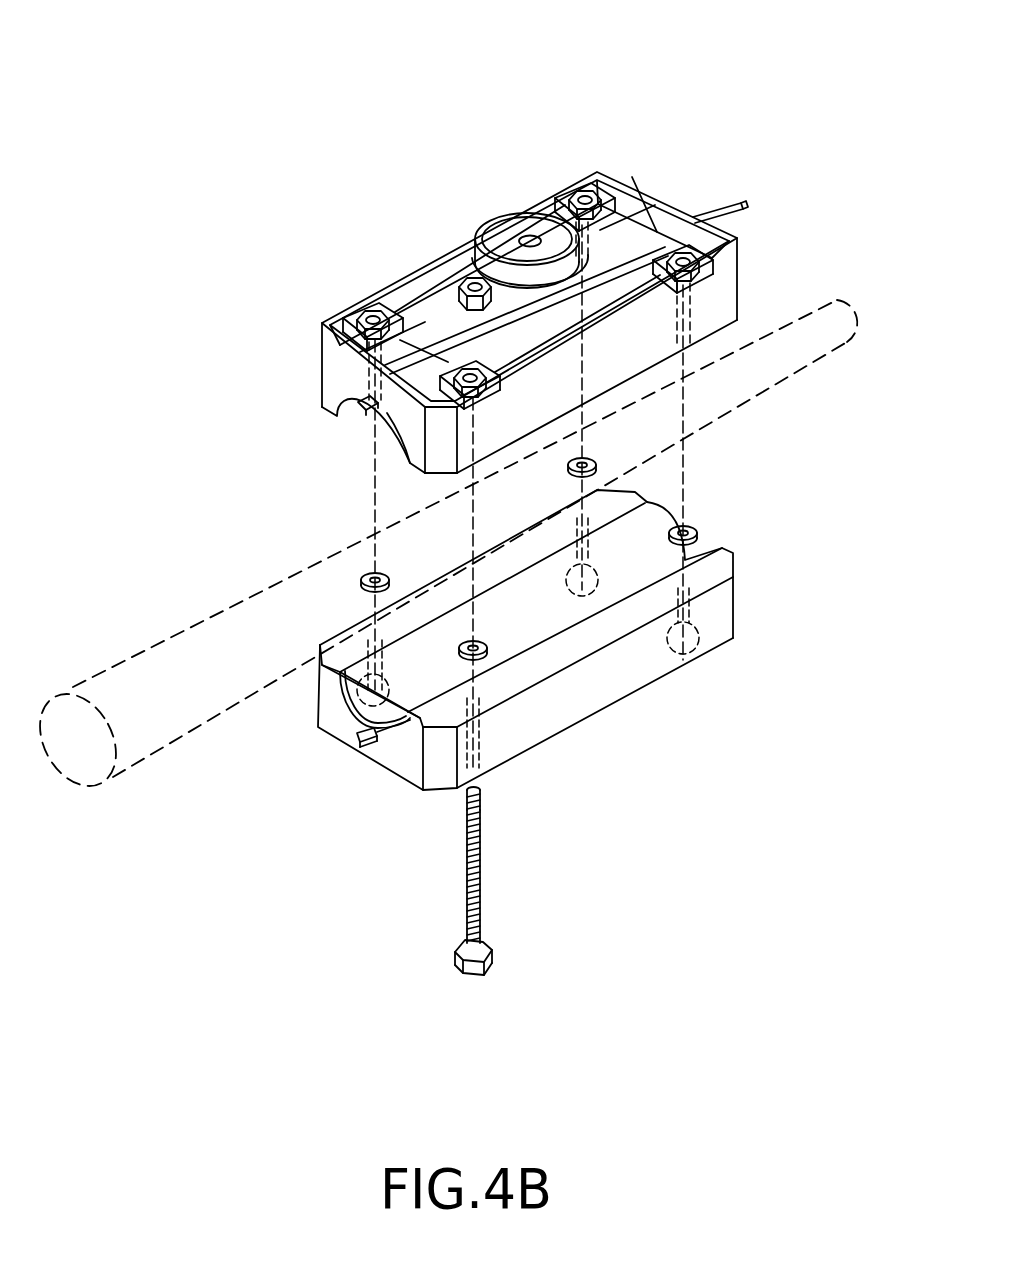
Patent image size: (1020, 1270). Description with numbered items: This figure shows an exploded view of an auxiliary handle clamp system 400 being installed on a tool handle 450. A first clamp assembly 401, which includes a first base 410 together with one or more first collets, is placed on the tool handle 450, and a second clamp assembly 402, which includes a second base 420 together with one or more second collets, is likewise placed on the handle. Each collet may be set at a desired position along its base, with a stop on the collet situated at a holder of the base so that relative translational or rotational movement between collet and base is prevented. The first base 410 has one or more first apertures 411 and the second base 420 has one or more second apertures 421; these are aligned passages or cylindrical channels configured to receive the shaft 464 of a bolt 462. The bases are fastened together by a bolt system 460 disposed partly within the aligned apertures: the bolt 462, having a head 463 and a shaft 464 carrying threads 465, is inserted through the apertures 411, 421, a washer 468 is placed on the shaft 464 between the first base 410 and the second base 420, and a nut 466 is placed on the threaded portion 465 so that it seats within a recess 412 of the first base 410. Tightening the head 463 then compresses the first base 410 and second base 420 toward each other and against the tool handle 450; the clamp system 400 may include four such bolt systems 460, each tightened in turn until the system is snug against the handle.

The clamp system 400 is at (814, 119).
The first clamp assembly 401 is at (803, 202).
The second clamp assembly 402 is at (805, 605).
The first base 410 is at (737, 282).
The first apertures 411 is at (350, 294).
The recess 412 is at (464, 356).
The second base 420 is at (723, 546).
The second apertures 421 is at (481, 765).
The tool handle 450 is at (100, 668).
The bolt system 460 is at (611, 934).
The bolt 462 is at (430, 919).
The head 463 is at (513, 973).
The shaft 464 is at (465, 858).
The threads 465 is at (482, 806).
The nut 466 is at (474, 284).
The washer 468 is at (479, 641).